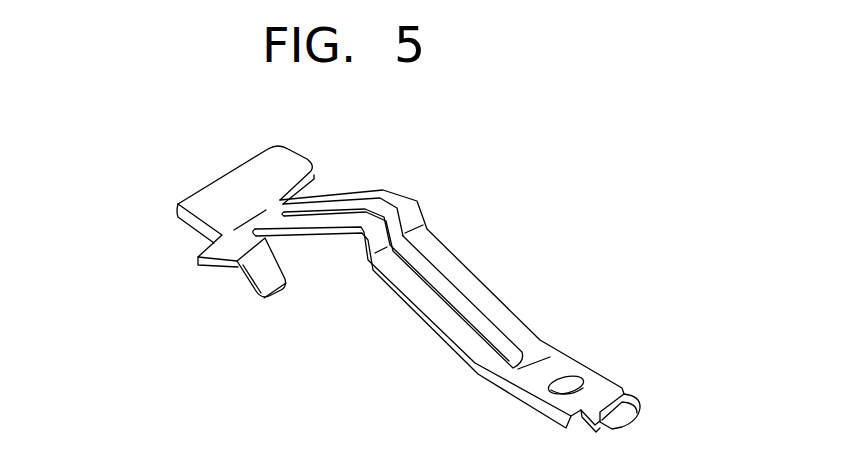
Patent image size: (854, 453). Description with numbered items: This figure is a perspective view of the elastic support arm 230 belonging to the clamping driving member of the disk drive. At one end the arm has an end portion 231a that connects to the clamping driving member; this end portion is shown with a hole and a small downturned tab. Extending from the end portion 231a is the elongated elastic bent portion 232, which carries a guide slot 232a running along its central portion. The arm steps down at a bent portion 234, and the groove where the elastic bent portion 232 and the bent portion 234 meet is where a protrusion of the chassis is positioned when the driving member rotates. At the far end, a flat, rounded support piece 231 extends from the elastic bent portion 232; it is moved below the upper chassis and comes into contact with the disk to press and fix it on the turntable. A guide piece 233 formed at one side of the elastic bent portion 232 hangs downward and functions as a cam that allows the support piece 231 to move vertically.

The elastic support arm 230 is at (535, 297).
The support piece 231 is at (230, 190).
The one end portion 231a is at (600, 393).
The elastic bent portion 232 is at (358, 238).
The guide slot 232a is at (413, 262).
The guide piece 233 is at (260, 273).
The bent portion 234 is at (408, 310).